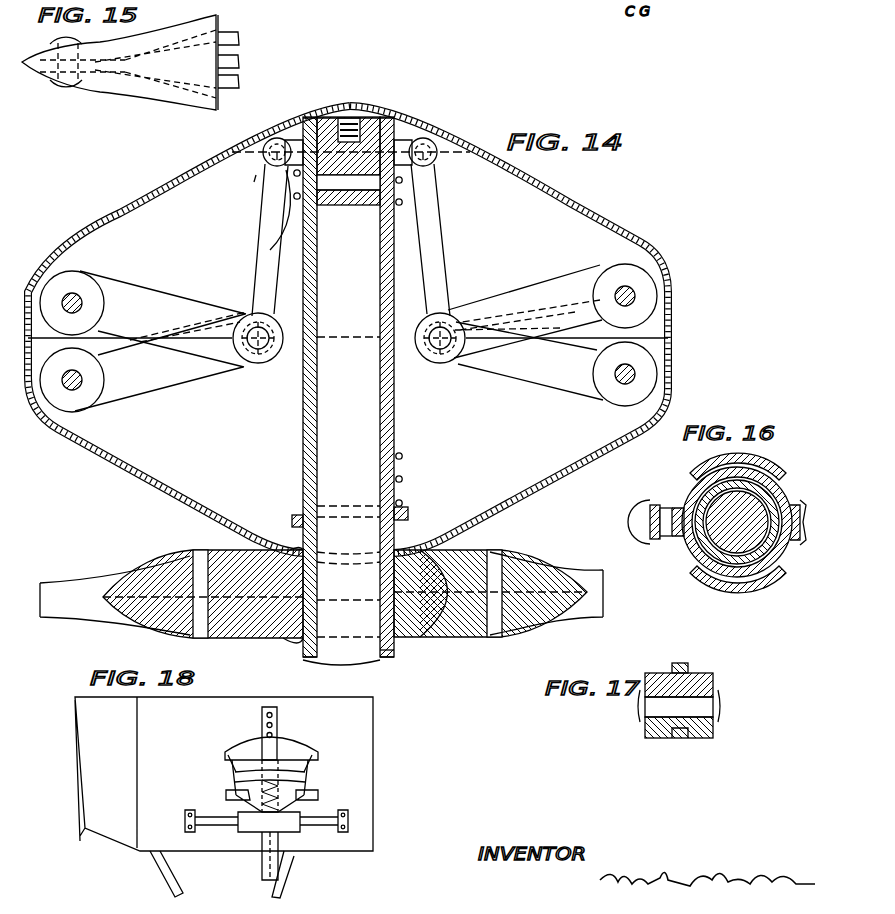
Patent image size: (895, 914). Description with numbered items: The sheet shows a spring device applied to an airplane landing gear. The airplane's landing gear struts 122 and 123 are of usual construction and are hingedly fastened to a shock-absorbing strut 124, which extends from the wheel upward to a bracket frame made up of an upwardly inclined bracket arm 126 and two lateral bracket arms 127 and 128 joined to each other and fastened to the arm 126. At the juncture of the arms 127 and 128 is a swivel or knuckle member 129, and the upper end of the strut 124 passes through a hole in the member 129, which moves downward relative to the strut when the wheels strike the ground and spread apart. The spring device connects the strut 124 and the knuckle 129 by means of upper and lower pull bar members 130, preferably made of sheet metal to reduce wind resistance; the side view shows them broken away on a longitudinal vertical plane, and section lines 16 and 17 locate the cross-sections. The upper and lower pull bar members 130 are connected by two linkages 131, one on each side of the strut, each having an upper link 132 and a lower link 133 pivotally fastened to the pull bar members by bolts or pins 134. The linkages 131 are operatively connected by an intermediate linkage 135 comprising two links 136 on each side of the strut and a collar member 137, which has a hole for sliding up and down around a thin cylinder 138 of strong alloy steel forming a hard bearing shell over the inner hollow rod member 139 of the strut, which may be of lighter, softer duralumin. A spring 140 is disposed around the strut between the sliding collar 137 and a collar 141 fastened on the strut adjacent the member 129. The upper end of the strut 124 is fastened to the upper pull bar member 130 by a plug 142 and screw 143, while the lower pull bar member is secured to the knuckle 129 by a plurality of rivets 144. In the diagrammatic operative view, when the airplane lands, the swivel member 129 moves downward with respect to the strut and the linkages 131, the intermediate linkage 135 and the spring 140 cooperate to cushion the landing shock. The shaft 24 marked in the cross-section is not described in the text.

In FIG. 14, the section line 16— 16 is at (349, 155).
In FIG. 14, the section line 17— 17 is at (367, 272).
In FIG. 16, the shaft 24 is at (737, 522).
In FIG. 18, the landing gear strut 122 is at (178, 878).
In FIG. 18, the landing gear strut 123 is at (282, 890).
In FIG. 14, the shock-absorbing strut 124 is at (379, 661).
In FIG. 18, the shock-absorbing strut 124 is at (279, 860).
In FIG. 18, the upwardly inclined bracket arm 126 is at (280, 712).
In FIG. 14, the lateral bracket arm 127 is at (555, 570).
In FIG. 18, the lateral bracket arm 127 is at (318, 818).
In FIG. 14, the lateral bracket arm 128 is at (82, 605).
In FIG. 18, the lateral bracket arm 128 is at (208, 816).
In FIG. 14, the swivel or knuckle member 129 is at (460, 640).
In FIG. 15, the pull bar member 130 is at (180, 98).
In FIG. 14, the pull bar member 130 is at (538, 498).
In FIG. 16, the pull bar member 130 is at (750, 585).
In FIG. 18, the pull bar member 130 is at (240, 788).
In FIG. 14, the linkage 131 is at (450, 292).
In FIG. 18, the linkage 131 is at (312, 776).
In FIG. 15, the upper link 132 is at (242, 90).
In FIG. 14, the upper link 132 is at (555, 268).
In FIG. 17, the upper link 132 is at (648, 735).
In FIG. 15, the lower link 133 is at (242, 63).
In FIG. 14, the lower link 133 is at (538, 400).
In FIG. 17, the lower link 133 is at (675, 740).
In FIG. 15, the bolt or pin 134 is at (78, 78).
In FIG. 14, the bolt or pin 134 is at (622, 290).
In FIG. 14, the intermediate linkage 135 is at (261, 177).
In FIG. 14, the link 136 is at (440, 258).
In FIG. 16, the link 136 is at (797, 540).
In FIG. 17, the link 136 is at (686, 668).
In FIG. 14, the collar member 137 is at (268, 228).
In FIG. 16, the collar member 137 is at (700, 560).
In FIG. 14, the thin cylinder 138 is at (396, 410).
In FIG. 16, the thin cylinder 138 is at (770, 495).
In FIG. 14, the inner hollow rod member 139 is at (402, 654).
In FIG. 14, the spring 140 is at (296, 456).
In FIG. 14, the collar 141 is at (410, 513).
In FIG. 14, the plug 142 is at (344, 115).
In FIG. 14, the screw 143 is at (376, 120).
In FIG. 14, the rivet 144 is at (292, 644).